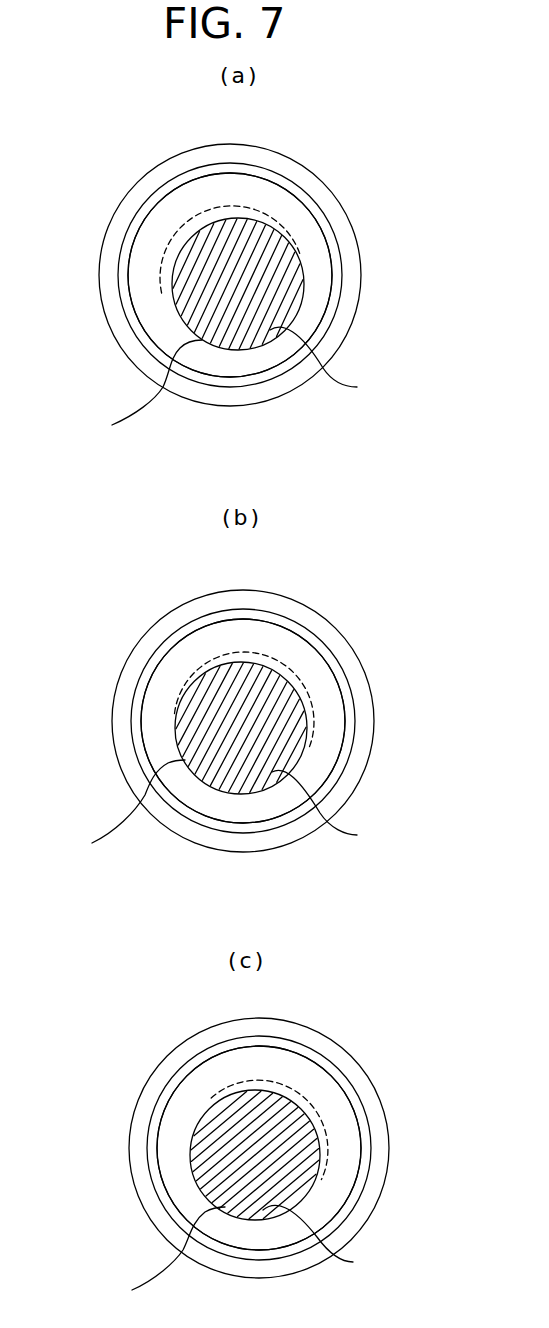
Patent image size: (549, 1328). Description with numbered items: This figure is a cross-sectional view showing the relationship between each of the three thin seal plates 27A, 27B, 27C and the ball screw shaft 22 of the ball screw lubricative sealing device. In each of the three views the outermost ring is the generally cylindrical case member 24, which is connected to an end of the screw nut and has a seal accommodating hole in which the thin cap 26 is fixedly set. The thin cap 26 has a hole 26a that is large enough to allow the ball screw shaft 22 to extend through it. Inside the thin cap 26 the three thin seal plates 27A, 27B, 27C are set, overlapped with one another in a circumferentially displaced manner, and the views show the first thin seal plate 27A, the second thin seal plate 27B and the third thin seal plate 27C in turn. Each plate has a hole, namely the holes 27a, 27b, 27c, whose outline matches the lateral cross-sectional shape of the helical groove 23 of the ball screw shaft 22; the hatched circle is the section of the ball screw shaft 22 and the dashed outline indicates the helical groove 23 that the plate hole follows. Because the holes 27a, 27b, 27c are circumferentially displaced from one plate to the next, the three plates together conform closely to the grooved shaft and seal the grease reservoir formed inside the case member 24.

The ball screw shaft 22 is at (192, 294).
The helical groove 23 is at (240, 210).
The case member 24 is at (330, 200).
The thin cap 26 is at (343, 313).
The hole 26a is at (344, 801).
The thin seal plate 27A is at (322, 280).
The thin seal plate 27B is at (325, 693).
The thin seal plate 27C is at (350, 1150).
The hole 27a is at (126, 390).
The hole 27b is at (109, 809).
The hole 27c is at (146, 1257).